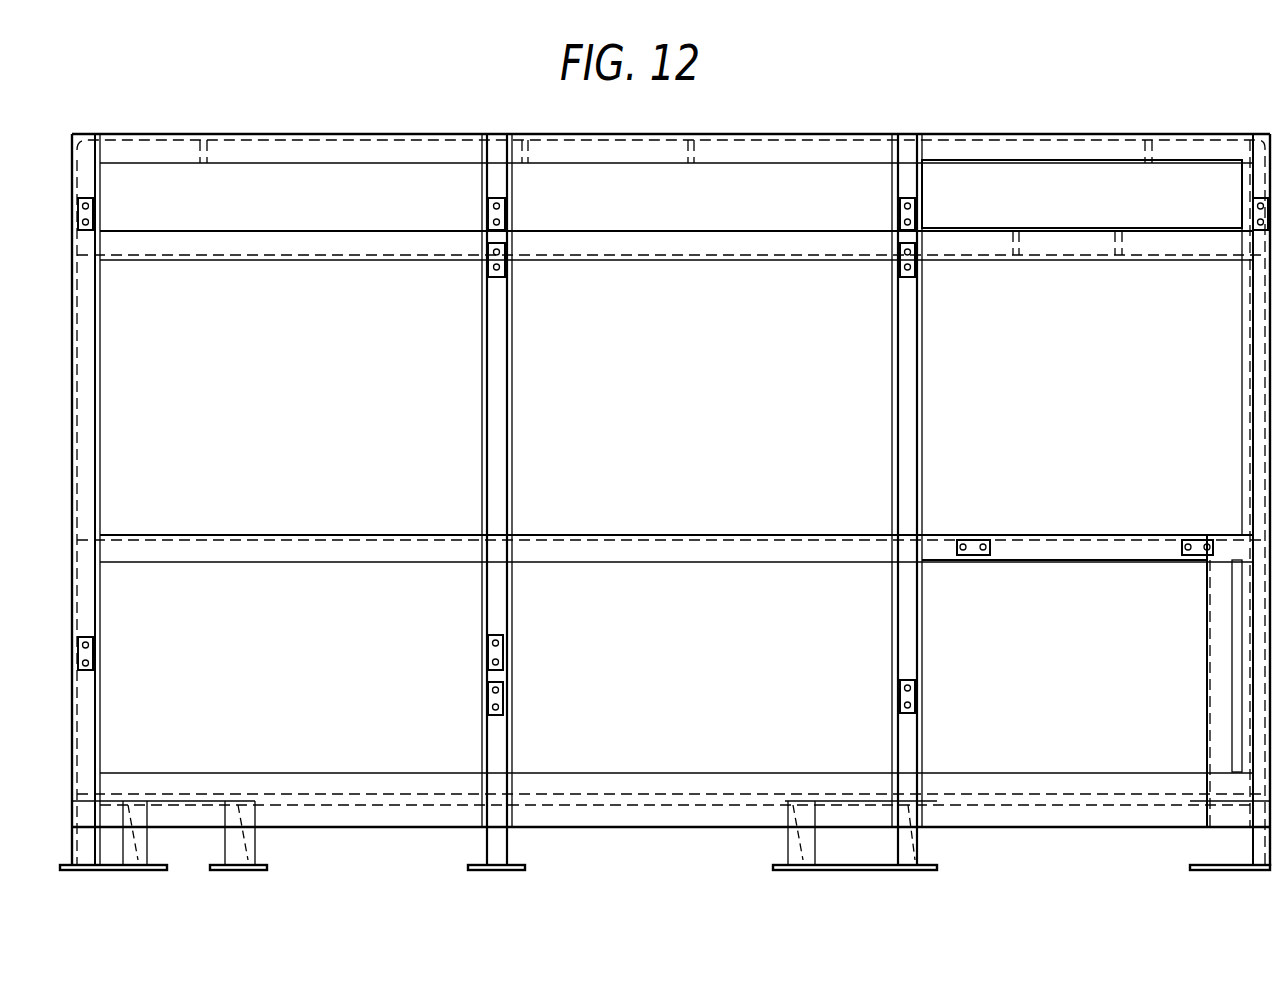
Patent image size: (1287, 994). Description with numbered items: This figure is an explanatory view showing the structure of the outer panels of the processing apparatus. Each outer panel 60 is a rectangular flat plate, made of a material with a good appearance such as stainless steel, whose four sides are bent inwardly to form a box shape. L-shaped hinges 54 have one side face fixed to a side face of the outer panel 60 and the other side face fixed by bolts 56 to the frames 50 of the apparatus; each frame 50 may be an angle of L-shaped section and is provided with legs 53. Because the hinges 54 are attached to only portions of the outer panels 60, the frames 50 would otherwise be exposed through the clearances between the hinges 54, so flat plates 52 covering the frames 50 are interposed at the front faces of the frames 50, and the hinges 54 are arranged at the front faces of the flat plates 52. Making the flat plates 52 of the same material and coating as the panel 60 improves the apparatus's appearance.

The frame 50 is at (497, 182).
The flat plate 52 is at (500, 422).
The leg 53 is at (912, 852).
The hinge 54 is at (508, 270).
The bolt 56 is at (506, 206).
The outer panel 60 is at (297, 434).